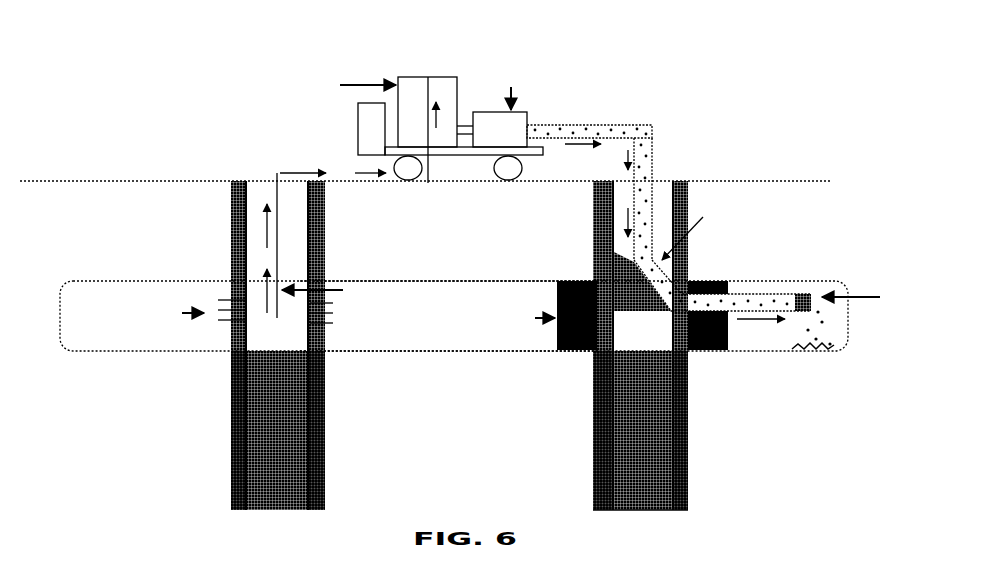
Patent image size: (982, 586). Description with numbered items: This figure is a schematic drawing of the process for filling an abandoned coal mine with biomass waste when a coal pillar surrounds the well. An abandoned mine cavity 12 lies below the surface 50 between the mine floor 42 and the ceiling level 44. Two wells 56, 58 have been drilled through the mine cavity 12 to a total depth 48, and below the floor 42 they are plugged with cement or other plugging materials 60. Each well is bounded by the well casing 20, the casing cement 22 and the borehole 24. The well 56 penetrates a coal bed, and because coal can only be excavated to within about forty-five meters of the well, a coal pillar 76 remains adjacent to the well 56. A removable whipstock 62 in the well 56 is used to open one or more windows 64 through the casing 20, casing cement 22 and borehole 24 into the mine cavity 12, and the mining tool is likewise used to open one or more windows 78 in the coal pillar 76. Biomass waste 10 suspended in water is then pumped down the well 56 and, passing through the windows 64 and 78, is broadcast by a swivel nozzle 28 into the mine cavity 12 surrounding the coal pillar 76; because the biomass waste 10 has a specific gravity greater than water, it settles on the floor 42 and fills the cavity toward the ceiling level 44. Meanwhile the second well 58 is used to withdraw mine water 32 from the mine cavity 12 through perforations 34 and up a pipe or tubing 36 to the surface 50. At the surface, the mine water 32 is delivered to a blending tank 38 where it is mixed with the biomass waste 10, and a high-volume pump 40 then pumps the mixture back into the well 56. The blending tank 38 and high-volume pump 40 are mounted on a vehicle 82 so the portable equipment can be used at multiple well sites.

The biomass waste 10 is at (654, 133).
The abandoned mine cavity 12 is at (474, 327).
The well casing 20 is at (675, 410).
The casing cement 22 is at (683, 440).
The borehole 24 is at (691, 470).
The swivel nozzle 28 is at (865, 297).
The mine water 32 is at (325, 302).
The perforations 34 is at (200, 312).
The pipe or tubing 36 is at (282, 212).
The blending tank 38 is at (354, 87).
The high-volume pump 40 is at (514, 87).
The floor 42 is at (452, 357).
The ceiling level 44 is at (452, 278).
The total depth 48 is at (693, 506).
The surface 50 is at (425, 164).
The well 56 is at (710, 348).
The well 58 is at (452, 341).
The plugging materials 60 is at (250, 407).
The removable whipstock 62 is at (625, 286).
The windows 64 is at (694, 277).
The coal pillar 76 is at (555, 315).
The windows 78 is at (737, 287).
The vehicle 82 is at (392, 55).